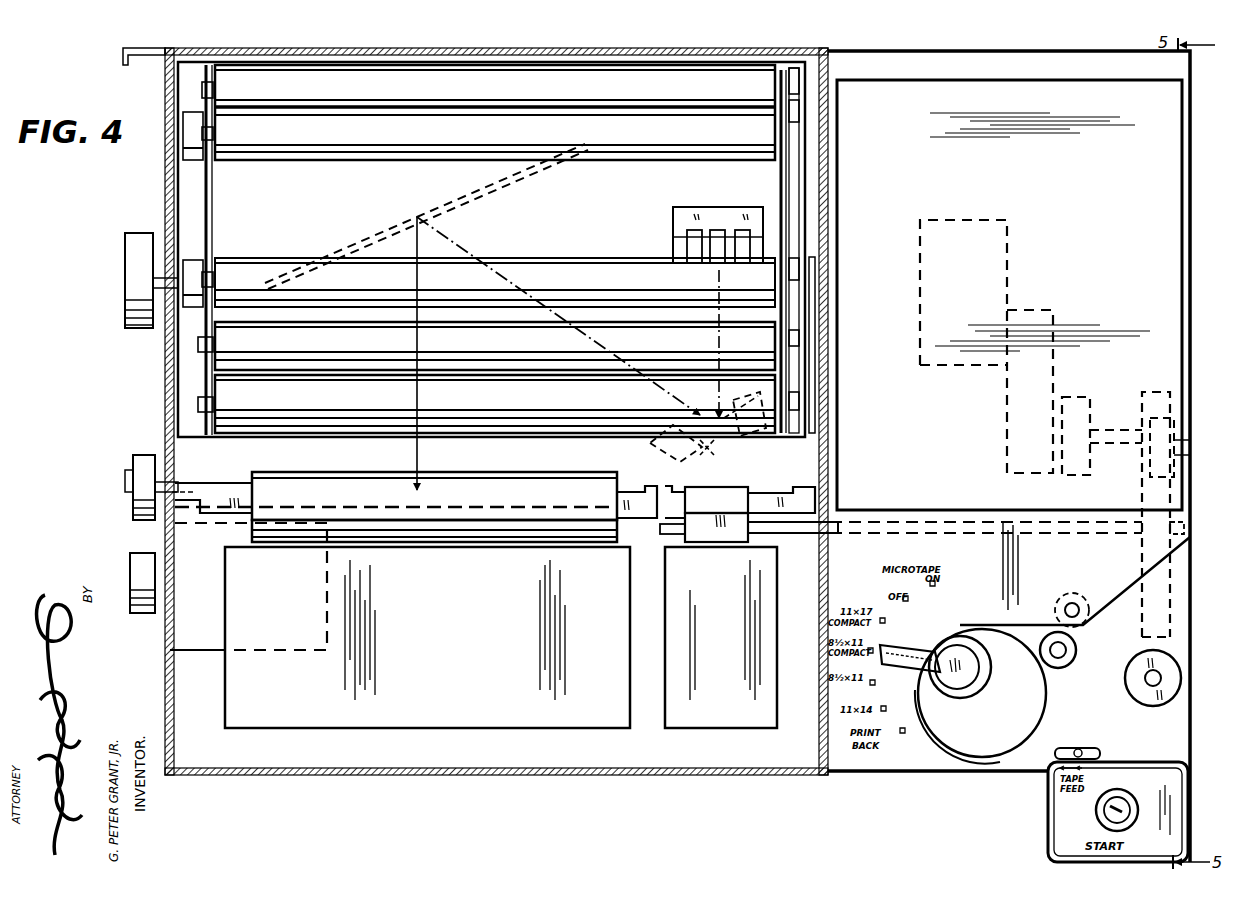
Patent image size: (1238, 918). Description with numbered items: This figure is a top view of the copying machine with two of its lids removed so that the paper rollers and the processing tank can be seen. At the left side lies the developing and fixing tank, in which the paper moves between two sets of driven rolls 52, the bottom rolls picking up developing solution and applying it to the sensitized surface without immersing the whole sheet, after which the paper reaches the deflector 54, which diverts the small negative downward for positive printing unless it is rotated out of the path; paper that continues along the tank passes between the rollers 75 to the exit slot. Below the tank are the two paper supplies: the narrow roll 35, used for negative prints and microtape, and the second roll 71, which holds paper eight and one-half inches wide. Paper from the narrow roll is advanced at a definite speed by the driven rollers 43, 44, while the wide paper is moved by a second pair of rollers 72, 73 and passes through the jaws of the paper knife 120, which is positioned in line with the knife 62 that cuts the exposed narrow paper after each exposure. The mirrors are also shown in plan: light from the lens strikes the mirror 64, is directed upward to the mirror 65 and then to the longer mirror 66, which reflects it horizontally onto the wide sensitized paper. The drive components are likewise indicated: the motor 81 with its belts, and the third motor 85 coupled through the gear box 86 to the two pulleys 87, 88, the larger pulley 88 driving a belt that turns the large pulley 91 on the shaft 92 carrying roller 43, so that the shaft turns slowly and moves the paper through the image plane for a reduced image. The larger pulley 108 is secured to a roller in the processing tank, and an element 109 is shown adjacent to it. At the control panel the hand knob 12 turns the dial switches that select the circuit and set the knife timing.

The hand knob 12 is at (957, 650).
The roll 35 is at (712, 728).
The driven roller 43 is at (708, 542).
The driven roller 44 is at (716, 488).
The driven rolls 52 is at (672, 355).
The deflector 54 is at (742, 214).
The knife 62 is at (778, 503).
The mirror 64 is at (691, 447).
The mirror 65 is at (740, 440).
The longer mirror 66 is at (414, 215).
The second roll 71 is at (390, 728).
The roller 72 is at (450, 540).
The roller 73 is at (512, 486).
The rollers 75 is at (664, 72).
The motor 81 is at (192, 650).
The third motor 85 is at (997, 255).
The gear box 86 is at (1042, 313).
The pulley 87 is at (1078, 405).
The pulley 88 is at (1161, 400).
The large pulley 91 is at (1152, 495).
The shaft 92 is at (1076, 538).
The larger pulley 108 is at (1084, 619).
The tape drive roller 109 is at (1060, 666).
The paper knife 120 is at (222, 495).